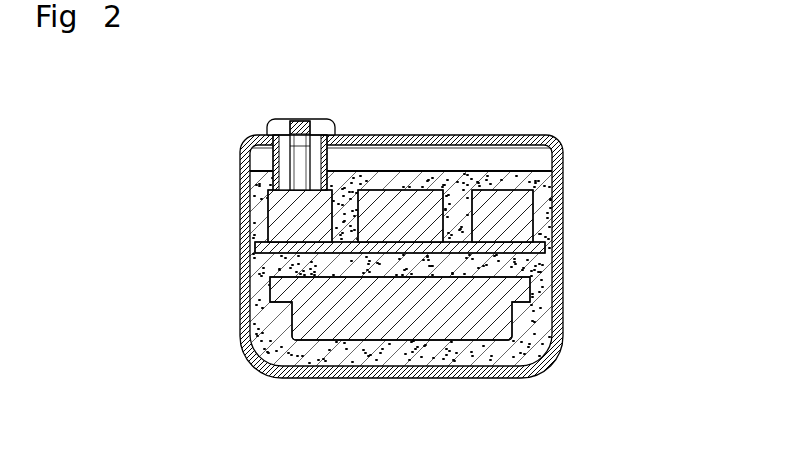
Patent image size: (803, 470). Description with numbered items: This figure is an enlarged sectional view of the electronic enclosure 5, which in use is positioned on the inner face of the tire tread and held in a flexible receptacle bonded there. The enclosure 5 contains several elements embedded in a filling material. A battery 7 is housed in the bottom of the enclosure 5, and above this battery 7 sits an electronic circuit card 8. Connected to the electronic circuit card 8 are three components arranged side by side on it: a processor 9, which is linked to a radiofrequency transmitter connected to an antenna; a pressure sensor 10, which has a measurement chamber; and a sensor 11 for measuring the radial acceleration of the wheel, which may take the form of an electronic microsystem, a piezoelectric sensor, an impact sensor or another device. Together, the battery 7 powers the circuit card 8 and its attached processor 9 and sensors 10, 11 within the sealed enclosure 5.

The electronic enclosure 5 is at (583, 262).
The battery 7 is at (394, 330).
The electronic circuit card 8 is at (273, 256).
The processor 9 is at (417, 203).
The pressure sensor 10 is at (283, 222).
The sensor for measuring the radial acceleration 11 is at (517, 218).